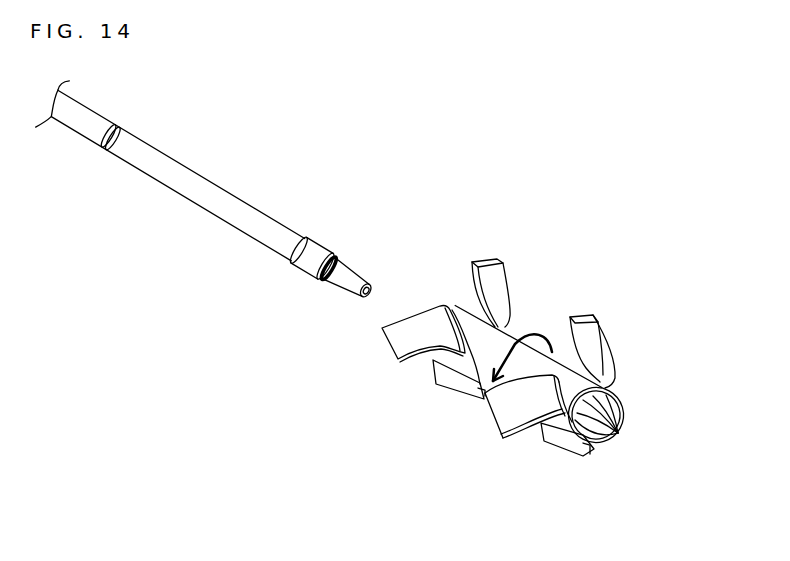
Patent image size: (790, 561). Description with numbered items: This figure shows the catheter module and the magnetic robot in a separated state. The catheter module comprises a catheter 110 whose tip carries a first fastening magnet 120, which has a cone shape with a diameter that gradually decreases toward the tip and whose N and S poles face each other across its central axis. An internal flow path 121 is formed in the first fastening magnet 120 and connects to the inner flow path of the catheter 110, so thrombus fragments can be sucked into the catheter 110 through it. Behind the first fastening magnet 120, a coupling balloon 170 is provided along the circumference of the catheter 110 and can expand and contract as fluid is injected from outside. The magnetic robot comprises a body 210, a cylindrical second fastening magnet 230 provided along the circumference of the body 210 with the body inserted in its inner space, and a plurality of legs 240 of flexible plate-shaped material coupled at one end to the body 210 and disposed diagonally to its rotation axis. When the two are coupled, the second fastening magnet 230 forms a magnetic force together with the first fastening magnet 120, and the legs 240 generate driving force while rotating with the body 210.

The catheter 110 is at (200, 186).
The coupling balloon 170 is at (323, 238).
The first fastening magnet 120 is at (353, 277).
The body 210 is at (577, 386).
The second fastening magnet 230 is at (500, 340).
The leg 240 is at (607, 339).
The internal flow path 121 is at (614, 435).